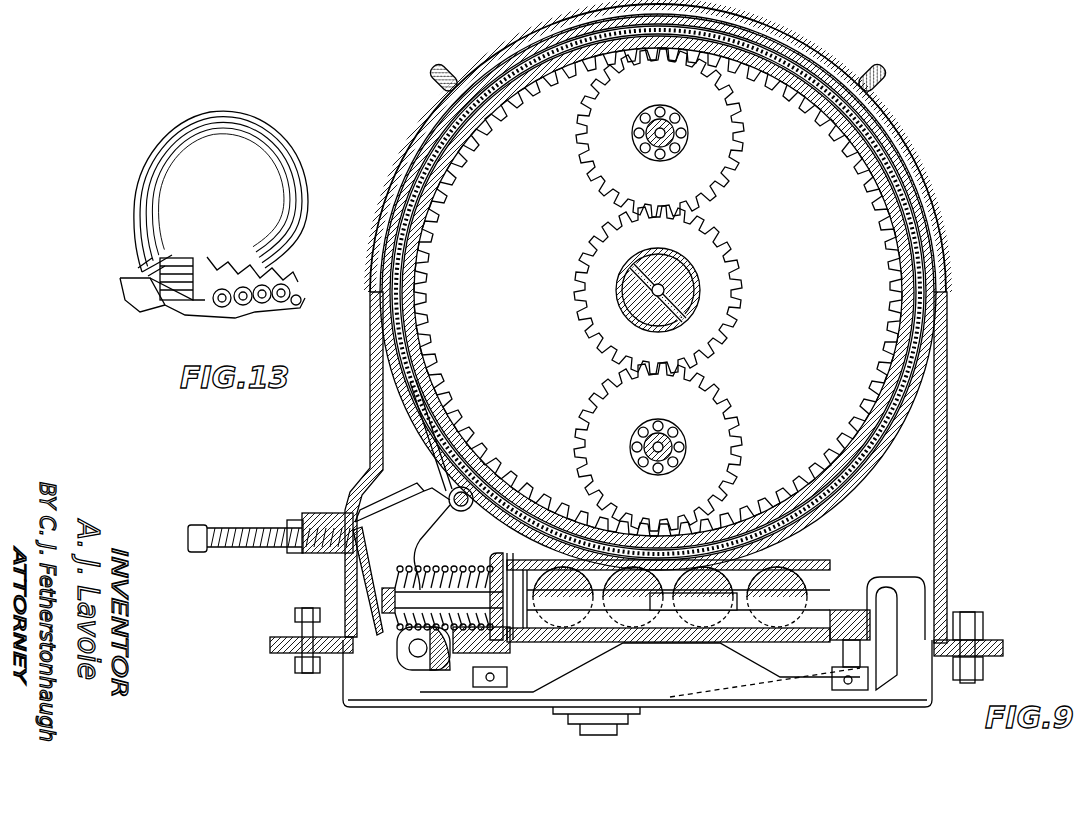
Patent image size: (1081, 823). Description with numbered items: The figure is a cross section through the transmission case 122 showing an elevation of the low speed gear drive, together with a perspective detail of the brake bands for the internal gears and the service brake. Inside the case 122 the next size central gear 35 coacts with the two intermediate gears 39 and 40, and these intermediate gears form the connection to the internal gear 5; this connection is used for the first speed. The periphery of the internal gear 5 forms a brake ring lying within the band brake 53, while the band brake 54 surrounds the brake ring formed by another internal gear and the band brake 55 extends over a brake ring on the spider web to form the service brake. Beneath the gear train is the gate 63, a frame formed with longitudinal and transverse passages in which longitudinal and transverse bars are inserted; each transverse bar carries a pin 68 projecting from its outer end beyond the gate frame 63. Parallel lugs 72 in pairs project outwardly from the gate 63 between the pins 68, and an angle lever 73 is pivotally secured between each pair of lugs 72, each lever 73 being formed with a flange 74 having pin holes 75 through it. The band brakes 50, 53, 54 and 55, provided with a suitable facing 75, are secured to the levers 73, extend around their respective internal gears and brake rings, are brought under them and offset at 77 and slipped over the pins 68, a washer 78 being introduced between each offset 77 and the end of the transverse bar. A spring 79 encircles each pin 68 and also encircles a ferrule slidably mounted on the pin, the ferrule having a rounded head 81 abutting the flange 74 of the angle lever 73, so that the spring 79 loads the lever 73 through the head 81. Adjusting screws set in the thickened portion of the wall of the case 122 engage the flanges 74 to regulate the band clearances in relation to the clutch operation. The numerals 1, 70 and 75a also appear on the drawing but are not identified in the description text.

In FIG. 9, the main shaft 1 is at (700, 292).
In FIG. 9, the internal gear 5 is at (893, 200).
In FIG. 9, the central gear 35 is at (720, 257).
In FIG. 9, the intermediate gear 39 is at (727, 153).
In FIG. 9, the intermediate gear 40 is at (715, 405).
In FIG. 13, the band brake 50 is at (298, 172).
In FIG. 9, the band brake 53 is at (400, 390).
In FIG. 13, the band brake 53 is at (242, 130).
In FIG. 13, the band brake 54 is at (238, 124).
In FIG. 13, the band brake 55 is at (212, 118).
In FIG. 9, the gate 63 is at (673, 642).
In FIG. 13, the gate 63 is at (262, 275).
In FIG. 9, the pin 68 is at (403, 640).
In FIG. 13, the pin 68 is at (175, 302).
In FIG. 9, the rollers 70 is at (567, 628).
In FIG. 13, the rollers 70 is at (228, 306).
In FIG. 13, the parallel lugs 72 is at (140, 283).
In FIG. 9, the angle lever 73 is at (430, 530).
In FIG. 13, the angle lever 73 is at (133, 262).
In FIG. 9, the flange 74 is at (368, 558).
In FIG. 9, the facing 75 is at (373, 597).
In FIG. 9, the outer band 75a is at (923, 272).
In FIG. 13, the outer band 75a is at (303, 220).
In FIG. 9, the offset 77 is at (495, 560).
In FIG. 13, the offset 77 is at (168, 270).
In FIG. 9, the washer 78 is at (510, 555).
In FIG. 9, the spring 79 is at (423, 590).
In FIG. 9, the rounded head 81 is at (381, 627).
In FIG. 9, the case 122 is at (947, 397).